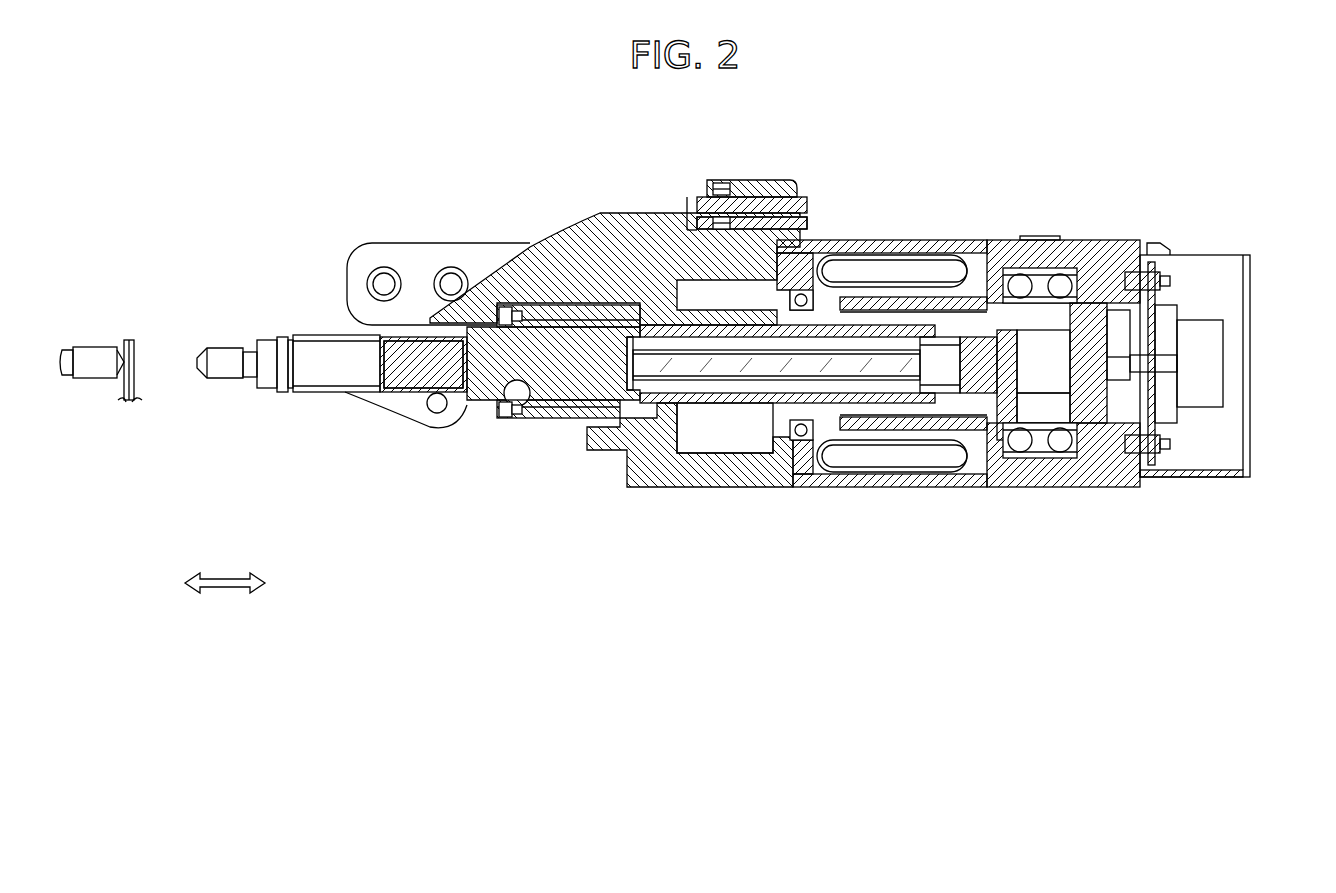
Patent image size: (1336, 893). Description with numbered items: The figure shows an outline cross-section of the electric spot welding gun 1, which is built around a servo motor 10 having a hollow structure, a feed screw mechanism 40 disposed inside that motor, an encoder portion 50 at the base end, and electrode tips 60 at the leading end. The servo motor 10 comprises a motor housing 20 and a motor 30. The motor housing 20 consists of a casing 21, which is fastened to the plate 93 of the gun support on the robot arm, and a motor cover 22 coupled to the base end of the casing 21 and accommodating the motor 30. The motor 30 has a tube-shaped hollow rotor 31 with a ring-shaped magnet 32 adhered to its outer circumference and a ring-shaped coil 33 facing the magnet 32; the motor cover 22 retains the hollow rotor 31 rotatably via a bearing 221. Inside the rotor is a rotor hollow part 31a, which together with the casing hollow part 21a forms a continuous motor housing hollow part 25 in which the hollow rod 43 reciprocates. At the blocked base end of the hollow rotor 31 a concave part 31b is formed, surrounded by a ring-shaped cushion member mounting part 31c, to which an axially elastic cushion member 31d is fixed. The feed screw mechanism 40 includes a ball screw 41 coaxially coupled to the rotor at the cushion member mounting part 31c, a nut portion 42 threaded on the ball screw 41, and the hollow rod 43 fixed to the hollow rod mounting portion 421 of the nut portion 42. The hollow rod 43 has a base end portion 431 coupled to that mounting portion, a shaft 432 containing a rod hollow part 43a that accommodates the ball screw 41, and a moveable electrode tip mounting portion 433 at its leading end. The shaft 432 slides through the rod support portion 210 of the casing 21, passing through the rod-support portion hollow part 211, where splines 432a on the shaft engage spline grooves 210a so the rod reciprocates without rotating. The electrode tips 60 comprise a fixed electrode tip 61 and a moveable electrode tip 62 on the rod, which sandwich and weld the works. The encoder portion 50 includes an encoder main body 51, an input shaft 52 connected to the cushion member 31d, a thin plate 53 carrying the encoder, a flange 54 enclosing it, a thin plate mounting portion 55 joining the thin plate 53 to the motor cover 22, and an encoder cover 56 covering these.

The electric spot welding gun 1 is at (978, 172).
The servo motor 10 is at (602, 203).
The motor housing 20 is at (556, 218).
The casing 21 is at (568, 262).
The casing hollow part 21a is at (753, 487).
The motor cover 22 is at (994, 262).
The motor housing hollow part 25 is at (717, 445).
The motor 30 is at (912, 153).
The hollow rotor 31 is at (857, 262).
The rotor hollow part 31a is at (1042, 320).
The concave part 31b is at (1127, 482).
The cushion member mounting part 31c is at (1112, 307).
The cushion member 31d is at (1167, 322).
The magnet 32 is at (888, 262).
The coil 33 is at (833, 250).
The feed screw mechanism 40 is at (857, 553).
The ball screw 41 is at (910, 487).
The nut portion 42 is at (977, 487).
The hollow rod 43 is at (773, 453).
The rod hollow part 43a is at (773, 487).
The encoder portion 50 is at (1262, 274).
The encoder main body 51 is at (1223, 363).
The input shaft 52 is at (1217, 480).
The thin plate 53 is at (1150, 320).
The flange 54 is at (1177, 360).
The thin plate mounting portion 55 is at (1163, 280).
The encoder cover 56 is at (1253, 430).
The electrode tips 60 is at (418, 421).
The fixed electrode tip 61 is at (95, 352).
The moveable electrode tip 62 is at (222, 355).
The plate 93 is at (695, 200).
The rod support portion 210 is at (547, 418).
The spline grooves 210a is at (535, 410).
The rod-support portion hollow part 211 is at (480, 390).
The bearing 221 is at (810, 485).
The hollow rod mounting portion 421 is at (1013, 487).
The base end portion 431 is at (990, 487).
The shaft 432 is at (490, 380).
The splines 432a is at (567, 407).
The moveable electrode tip mounting portion 433 is at (410, 385).